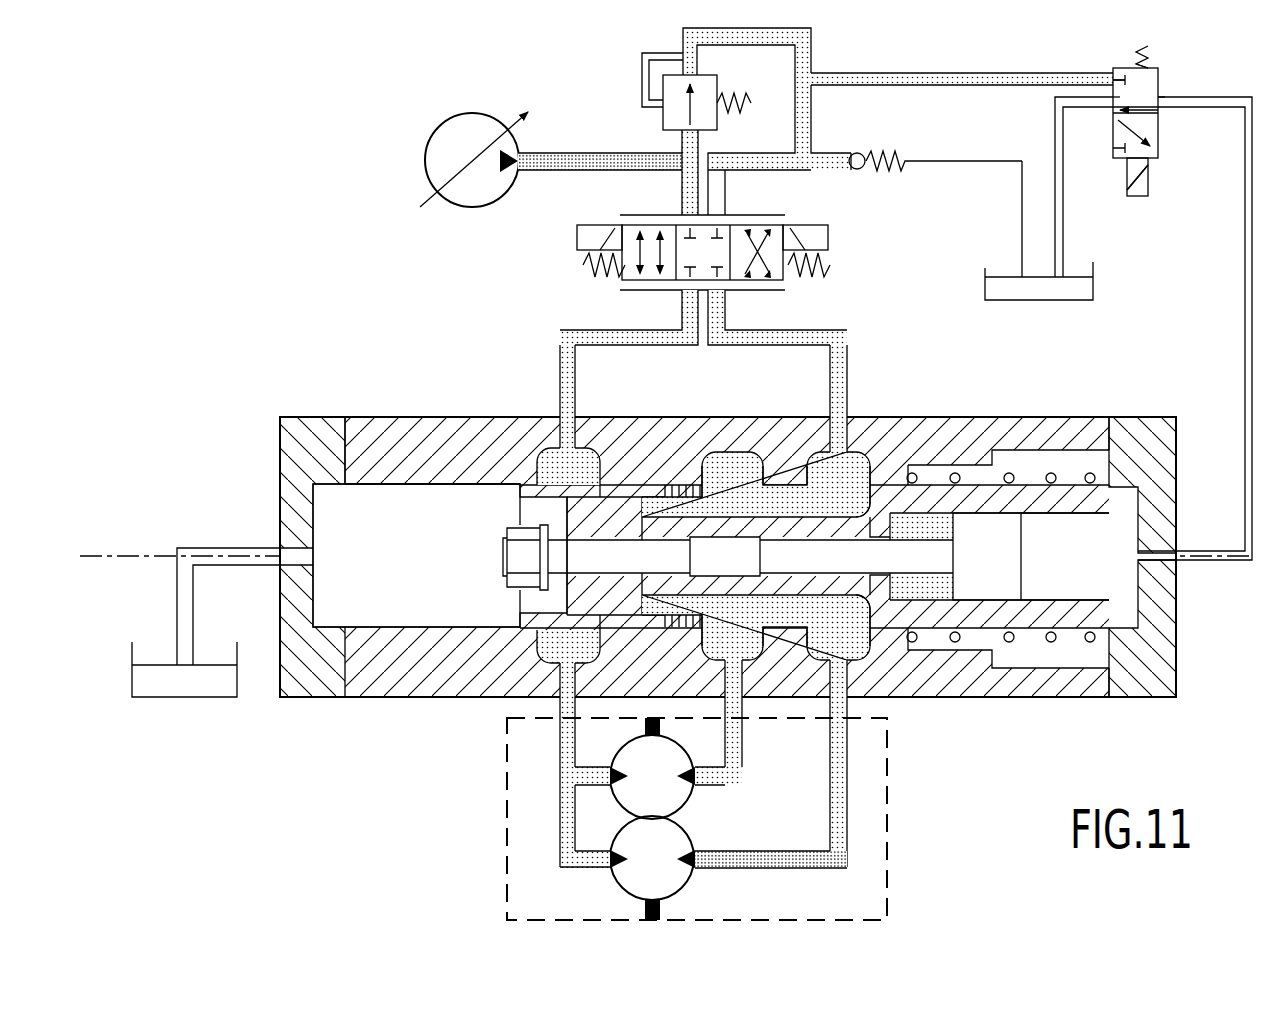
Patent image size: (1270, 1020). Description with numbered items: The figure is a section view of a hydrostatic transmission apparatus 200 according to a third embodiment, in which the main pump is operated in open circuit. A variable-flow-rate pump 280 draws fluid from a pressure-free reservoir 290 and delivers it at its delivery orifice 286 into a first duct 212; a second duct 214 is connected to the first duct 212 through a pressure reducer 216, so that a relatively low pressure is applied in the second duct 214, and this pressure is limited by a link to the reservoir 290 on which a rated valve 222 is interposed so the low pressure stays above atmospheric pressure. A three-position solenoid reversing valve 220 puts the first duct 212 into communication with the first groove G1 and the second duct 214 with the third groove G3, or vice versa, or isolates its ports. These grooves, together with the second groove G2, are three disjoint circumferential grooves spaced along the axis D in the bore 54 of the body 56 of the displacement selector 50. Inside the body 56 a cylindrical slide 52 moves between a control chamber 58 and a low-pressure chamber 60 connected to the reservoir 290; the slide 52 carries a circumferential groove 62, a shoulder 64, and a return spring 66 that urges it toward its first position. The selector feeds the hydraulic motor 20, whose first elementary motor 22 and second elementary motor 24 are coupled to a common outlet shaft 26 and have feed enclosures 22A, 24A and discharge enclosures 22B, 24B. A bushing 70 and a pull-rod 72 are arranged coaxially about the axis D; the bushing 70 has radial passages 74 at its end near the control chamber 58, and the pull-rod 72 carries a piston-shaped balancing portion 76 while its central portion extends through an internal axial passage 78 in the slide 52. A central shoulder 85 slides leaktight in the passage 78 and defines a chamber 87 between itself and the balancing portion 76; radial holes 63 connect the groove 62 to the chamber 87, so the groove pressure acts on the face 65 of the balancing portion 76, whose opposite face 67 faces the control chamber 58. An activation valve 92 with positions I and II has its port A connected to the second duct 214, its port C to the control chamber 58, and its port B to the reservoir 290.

The hydraulic motor 20 is at (503, 812).
The first elementary motor 22 is at (664, 788).
The feed enclosure 22A is at (704, 767).
The discharge enclosure 22B is at (595, 767).
The second elementary motor 24 is at (664, 869).
The feed enclosure 24A is at (709, 850).
The discharge enclosure 24B is at (595, 850).
The common outlet shaft 26 is at (662, 908).
The displacement selector 50 is at (441, 410).
The slide 52 is at (1033, 620).
The bore 54 is at (478, 490).
The body 56 is at (374, 425).
The control chamber 58 is at (1109, 554).
The low-pressure chamber 60 is at (373, 546).
The circumferential groove 62 is at (733, 606).
The radial holes 63 is at (878, 514).
The shoulder 64 is at (1115, 690).
The face 65 is at (940, 583).
The spring 66 is at (955, 637).
The face 67 is at (1021, 575).
The bushing 70 is at (623, 627).
The pull-rod 72 is at (568, 595).
The radial passages 74 is at (687, 615).
The balancing portion 76 is at (1000, 571).
The internal axial passage 78 is at (999, 556).
The central shoulder 85 is at (752, 600).
The chamber 87 is at (867, 580).
The activation valve 92 is at (1167, 77).
The hydrostatic transmission apparatus 200 is at (471, 263).
The first duct 212 is at (682, 190).
The second duct 214 is at (808, 112).
The pressure reducer 216 is at (663, 120).
The reversing valve 220 is at (595, 282).
The rated valve 222 is at (864, 176).
The pump 280 is at (466, 113).
The delivery orifice 286 is at (529, 151).
The pressure-free reservoir 290 is at (185, 698).
The first groove G1 is at (598, 454).
The second groove G2 is at (738, 454).
The third groove G3 is at (819, 454).
The axis D is at (119, 556).
The port A is at (1111, 71).
The port B is at (1112, 106).
The port C is at (1163, 106).
The valve position I is at (1148, 67).
The valve position II is at (1156, 166).